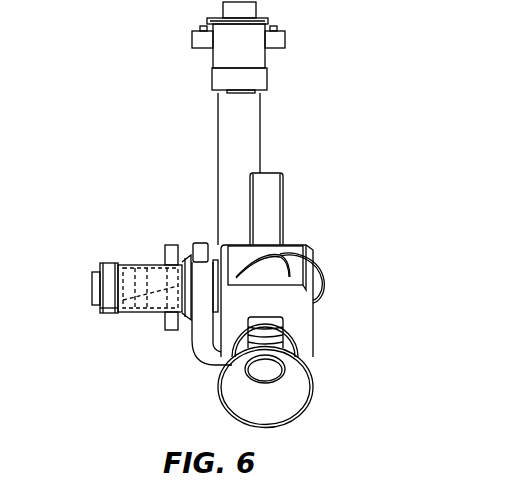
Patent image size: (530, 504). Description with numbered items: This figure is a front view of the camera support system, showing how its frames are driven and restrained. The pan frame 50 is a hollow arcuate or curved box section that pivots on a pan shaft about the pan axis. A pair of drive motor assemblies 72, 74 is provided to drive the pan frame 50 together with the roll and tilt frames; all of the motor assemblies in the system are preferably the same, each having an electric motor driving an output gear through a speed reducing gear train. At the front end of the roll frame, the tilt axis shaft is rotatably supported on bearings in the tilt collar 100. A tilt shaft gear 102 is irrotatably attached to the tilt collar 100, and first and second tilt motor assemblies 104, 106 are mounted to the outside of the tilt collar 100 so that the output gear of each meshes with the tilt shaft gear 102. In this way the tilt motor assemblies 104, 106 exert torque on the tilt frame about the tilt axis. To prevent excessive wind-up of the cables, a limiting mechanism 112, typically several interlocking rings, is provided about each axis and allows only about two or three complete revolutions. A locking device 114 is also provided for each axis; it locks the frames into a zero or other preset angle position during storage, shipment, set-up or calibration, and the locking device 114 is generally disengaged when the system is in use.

The pan frame 50 is at (248, 148).
The drive motor assembly 72 is at (197, 40).
The drive motor assembly 74 is at (280, 38).
The tilt collar 100 is at (108, 270).
The tilt shaft gear 102 is at (140, 318).
The first tilt motor assembly 104 is at (173, 246).
The second tilt motor assembly 106 is at (170, 335).
The limiting mechanism 112 is at (100, 315).
The locking device 114 is at (97, 268).